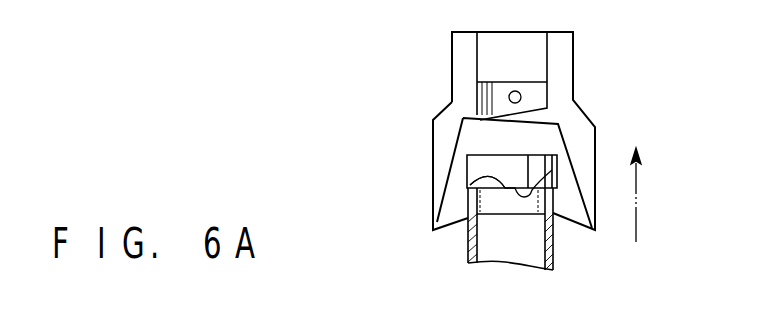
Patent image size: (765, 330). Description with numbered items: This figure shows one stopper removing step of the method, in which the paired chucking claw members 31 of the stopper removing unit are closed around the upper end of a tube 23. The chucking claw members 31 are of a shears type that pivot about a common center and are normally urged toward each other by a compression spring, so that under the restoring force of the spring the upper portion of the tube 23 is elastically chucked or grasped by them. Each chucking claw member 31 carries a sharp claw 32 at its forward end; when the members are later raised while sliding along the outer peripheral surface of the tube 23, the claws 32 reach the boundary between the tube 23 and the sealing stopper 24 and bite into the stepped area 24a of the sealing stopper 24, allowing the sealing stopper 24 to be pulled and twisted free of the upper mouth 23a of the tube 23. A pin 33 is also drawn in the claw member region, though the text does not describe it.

The chucking claw member 31 is at (583, 70).
The pin 33 is at (509, 97).
The claw 32 is at (460, 228).
The sealing stopper 24 is at (468, 157).
The stepped area 24a is at (552, 170).
The upper mouth 23a is at (470, 185).
The tube 23 is at (553, 257).